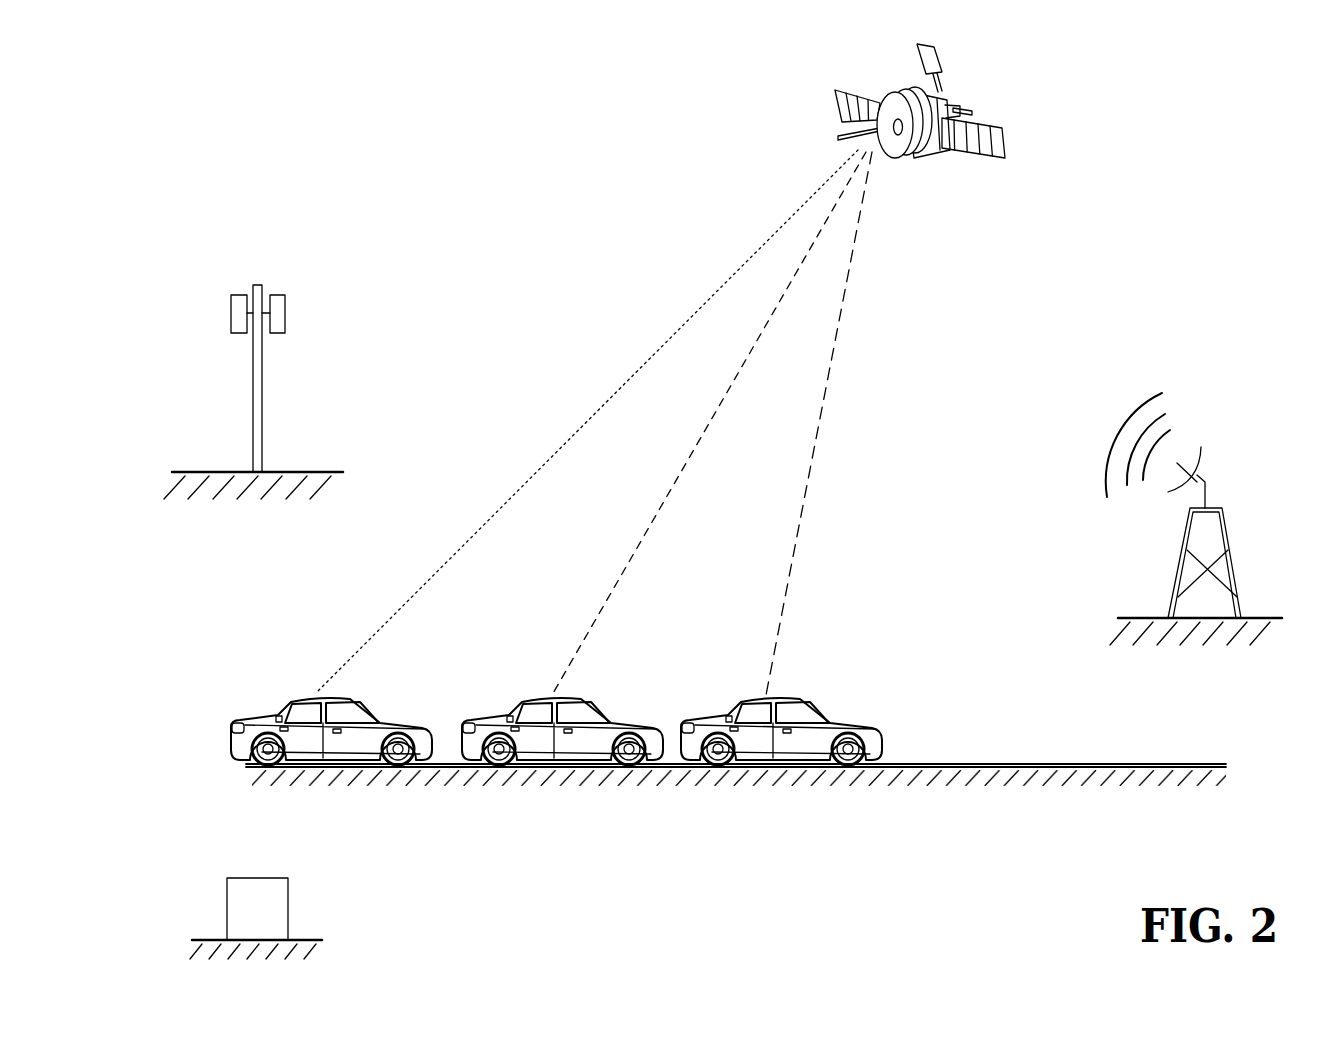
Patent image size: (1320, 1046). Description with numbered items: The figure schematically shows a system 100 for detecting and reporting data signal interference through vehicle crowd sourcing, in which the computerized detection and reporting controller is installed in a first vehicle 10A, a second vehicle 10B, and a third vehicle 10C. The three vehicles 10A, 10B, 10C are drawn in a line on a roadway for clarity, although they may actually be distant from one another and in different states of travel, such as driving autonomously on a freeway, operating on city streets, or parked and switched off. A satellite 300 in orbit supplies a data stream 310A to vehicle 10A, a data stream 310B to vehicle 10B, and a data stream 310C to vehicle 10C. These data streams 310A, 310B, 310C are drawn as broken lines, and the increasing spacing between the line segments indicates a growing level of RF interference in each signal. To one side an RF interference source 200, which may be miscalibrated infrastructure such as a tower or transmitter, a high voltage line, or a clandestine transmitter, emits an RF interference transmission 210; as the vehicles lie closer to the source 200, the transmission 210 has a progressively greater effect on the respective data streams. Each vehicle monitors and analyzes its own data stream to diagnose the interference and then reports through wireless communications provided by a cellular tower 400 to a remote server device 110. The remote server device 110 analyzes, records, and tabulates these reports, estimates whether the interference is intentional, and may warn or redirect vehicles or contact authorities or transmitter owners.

The system 100 is at (386, 213).
The first vehicle 10A is at (276, 698).
The second vehicle 10B is at (535, 697).
The third vehicle 10C is at (803, 700).
The remote server device 110 is at (226, 912).
The RF interference source 200 is at (1228, 530).
The RF interference transmission 210 is at (1135, 410).
The satellite 300 is at (952, 102).
The data stream 310A is at (663, 348).
The data stream 310B is at (663, 512).
The data stream 310C is at (822, 418).
The cellular tower 400 is at (230, 318).